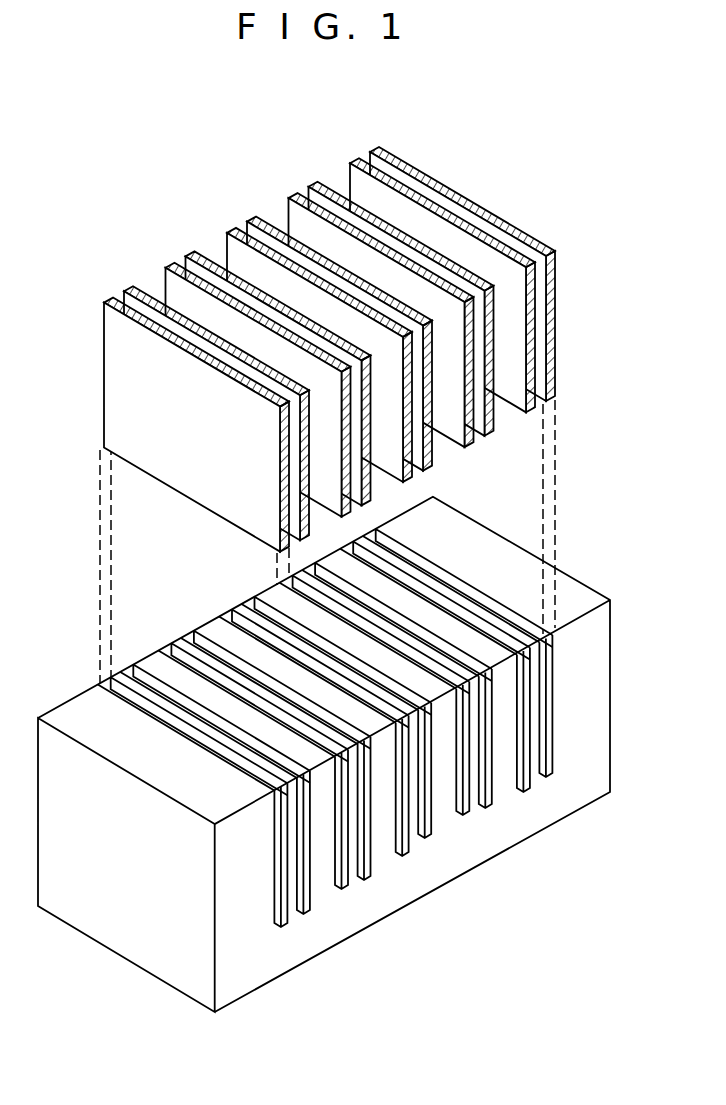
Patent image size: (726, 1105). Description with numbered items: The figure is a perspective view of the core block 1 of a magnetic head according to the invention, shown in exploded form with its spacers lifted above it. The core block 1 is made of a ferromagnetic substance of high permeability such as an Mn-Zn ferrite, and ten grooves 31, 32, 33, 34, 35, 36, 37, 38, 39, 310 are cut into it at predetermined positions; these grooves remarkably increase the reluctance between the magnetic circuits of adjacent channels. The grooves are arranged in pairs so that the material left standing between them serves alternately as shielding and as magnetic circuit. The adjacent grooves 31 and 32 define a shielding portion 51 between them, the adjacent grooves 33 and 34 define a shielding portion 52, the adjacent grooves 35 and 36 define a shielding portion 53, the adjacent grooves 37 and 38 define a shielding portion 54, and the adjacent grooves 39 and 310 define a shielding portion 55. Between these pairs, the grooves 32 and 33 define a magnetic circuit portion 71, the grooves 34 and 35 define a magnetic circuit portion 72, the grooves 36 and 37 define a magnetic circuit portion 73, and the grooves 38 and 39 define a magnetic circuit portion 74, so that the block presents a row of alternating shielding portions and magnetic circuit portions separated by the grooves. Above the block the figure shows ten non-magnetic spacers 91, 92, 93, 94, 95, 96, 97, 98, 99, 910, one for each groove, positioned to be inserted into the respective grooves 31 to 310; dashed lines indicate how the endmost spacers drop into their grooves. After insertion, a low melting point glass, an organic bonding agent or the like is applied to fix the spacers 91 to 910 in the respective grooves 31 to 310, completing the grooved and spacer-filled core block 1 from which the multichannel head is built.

The core block 1 is at (82, 1002).
The groove 31 is at (551, 761).
The groove 32 is at (530, 790).
The groove 33 is at (491, 798).
The groove 34 is at (464, 816).
The groove 35 is at (426, 838).
The groove 36 is at (403, 857).
The groove 37 is at (363, 882).
The groove 38 is at (342, 890).
The groove 39 is at (305, 916).
The groove 310 is at (281, 928).
The shielding portion 51 is at (540, 714).
The shielding portion 52 is at (472, 742).
The shielding portion 53 is at (411, 778).
The shielding portion 54 is at (350, 820).
The shielding portion 55 is at (290, 857).
The magnetic circuit portion 71 is at (302, 562).
The magnetic circuit portion 72 is at (246, 593).
The magnetic circuit portion 73 is at (192, 627).
The magnetic circuit portion 74 is at (153, 663).
The non-magnetic spacer 91 is at (377, 148).
The non-magnetic spacer 92 is at (357, 160).
The non-magnetic spacer 93 is at (315, 184).
The non-magnetic spacer 94 is at (295, 195).
The non-magnetic spacer 95 is at (254, 219).
The non-magnetic spacer 96 is at (234, 230).
The non-magnetic spacer 97 is at (192, 253).
The non-magnetic spacer 98 is at (172, 264).
The non-magnetic spacer 99 is at (131, 288).
The non-magnetic spacer 910 is at (110, 300).